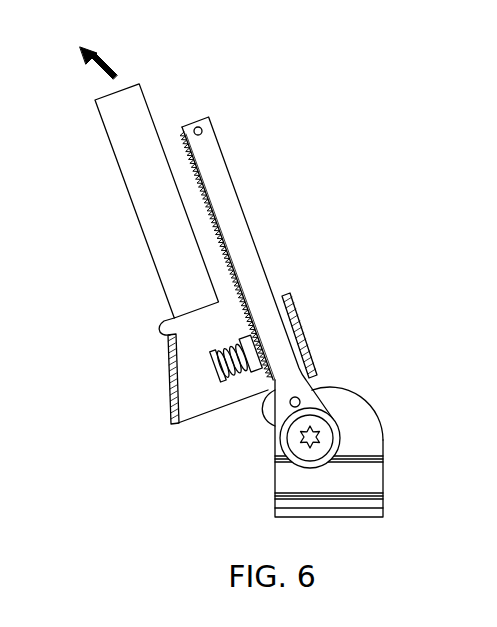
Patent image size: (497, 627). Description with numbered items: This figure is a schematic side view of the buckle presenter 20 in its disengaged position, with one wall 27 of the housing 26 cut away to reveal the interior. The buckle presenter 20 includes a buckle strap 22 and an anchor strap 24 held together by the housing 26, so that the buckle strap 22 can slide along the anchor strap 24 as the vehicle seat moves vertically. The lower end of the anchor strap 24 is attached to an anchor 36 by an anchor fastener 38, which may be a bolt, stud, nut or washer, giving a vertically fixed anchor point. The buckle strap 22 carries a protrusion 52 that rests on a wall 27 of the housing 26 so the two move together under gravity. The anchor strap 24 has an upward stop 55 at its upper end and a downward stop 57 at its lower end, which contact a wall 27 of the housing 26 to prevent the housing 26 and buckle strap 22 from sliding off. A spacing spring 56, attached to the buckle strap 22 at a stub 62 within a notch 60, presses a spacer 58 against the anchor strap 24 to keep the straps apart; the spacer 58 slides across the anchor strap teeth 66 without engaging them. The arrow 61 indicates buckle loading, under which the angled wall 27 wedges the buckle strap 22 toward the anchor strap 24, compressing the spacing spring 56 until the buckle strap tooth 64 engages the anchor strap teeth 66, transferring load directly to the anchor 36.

The buckle presenter 20 is at (276, 122).
The buckle strap 22 is at (132, 208).
The anchor strap 24 is at (227, 236).
The housing 26 is at (207, 344).
The wall 27 is at (229, 344).
The anchor 36 is at (377, 487).
The anchor fastener 38 is at (328, 434).
The protrusion 52 is at (160, 326).
The upward stop 55 is at (198, 127).
The spacing spring 56 is at (227, 382).
The downward stop 57 is at (300, 401).
The spacer 58 is at (275, 351).
The notch 60 is at (252, 378).
The arrow 61 is at (102, 62).
The stub 62 is at (215, 368).
The buckle strap tooth 64 is at (240, 308).
The anchor strap teeth 66 is at (184, 140).